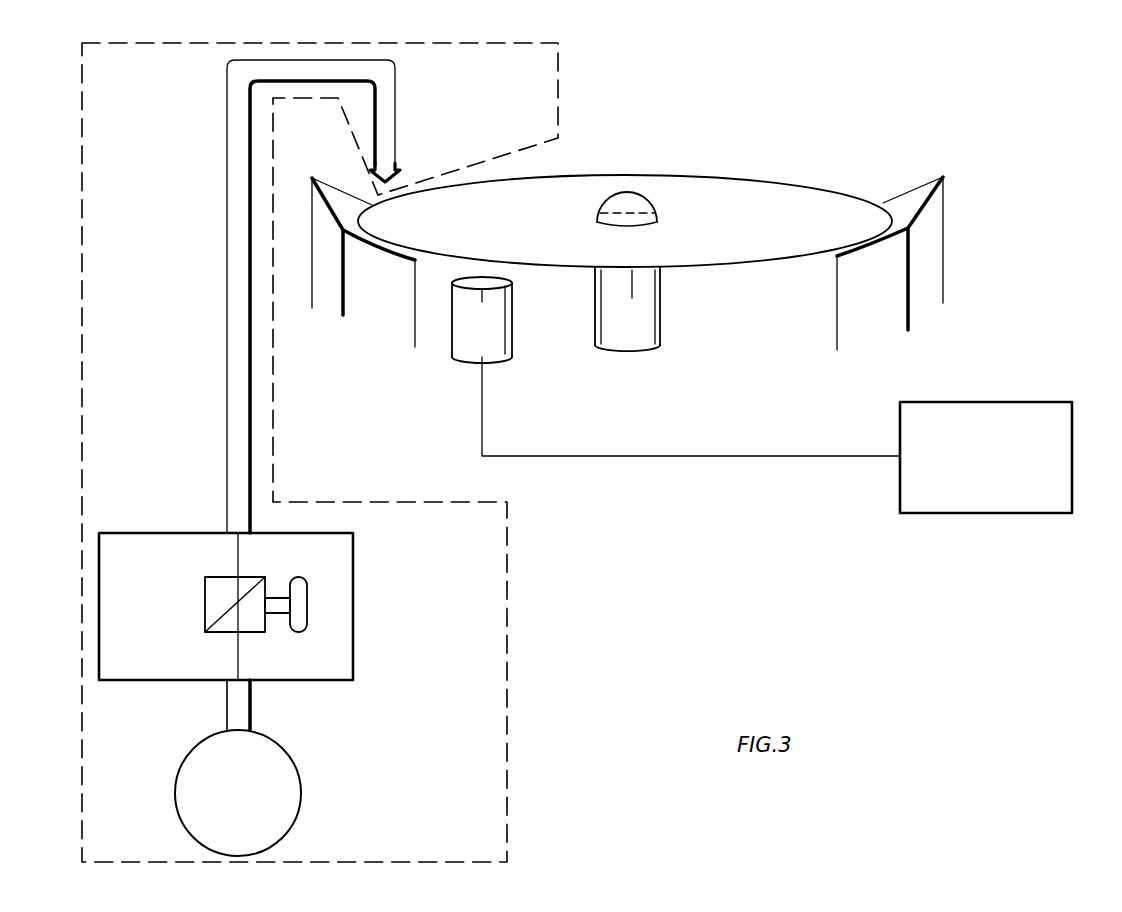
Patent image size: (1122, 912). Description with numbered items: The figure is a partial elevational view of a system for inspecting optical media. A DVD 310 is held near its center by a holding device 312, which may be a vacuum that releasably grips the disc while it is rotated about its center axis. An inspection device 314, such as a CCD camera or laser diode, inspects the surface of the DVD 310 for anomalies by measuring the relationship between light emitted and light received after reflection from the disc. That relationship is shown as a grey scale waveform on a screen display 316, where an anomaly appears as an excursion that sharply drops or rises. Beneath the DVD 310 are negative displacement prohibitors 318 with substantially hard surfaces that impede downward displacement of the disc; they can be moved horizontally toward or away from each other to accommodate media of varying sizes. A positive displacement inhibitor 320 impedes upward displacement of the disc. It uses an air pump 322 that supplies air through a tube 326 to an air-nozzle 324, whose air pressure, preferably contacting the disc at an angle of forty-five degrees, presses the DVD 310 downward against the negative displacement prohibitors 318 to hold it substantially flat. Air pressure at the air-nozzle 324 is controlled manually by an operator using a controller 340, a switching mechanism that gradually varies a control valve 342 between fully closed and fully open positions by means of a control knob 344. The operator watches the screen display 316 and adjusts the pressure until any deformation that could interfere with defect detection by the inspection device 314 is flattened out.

The DVD 310 is at (832, 190).
The holding device 312 is at (632, 340).
The inspection device 314 is at (510, 344).
The screen display 316 is at (985, 418).
The negative displacement prohibitors 318 is at (933, 268).
The positive displacement inhibitor 320 is at (508, 622).
The air pump 322 is at (298, 777).
The air-nozzle 324 is at (398, 170).
The tube 326 is at (228, 148).
The controller 340 is at (353, 630).
The control valve 342 is at (204, 603).
The control knob 344 is at (308, 592).